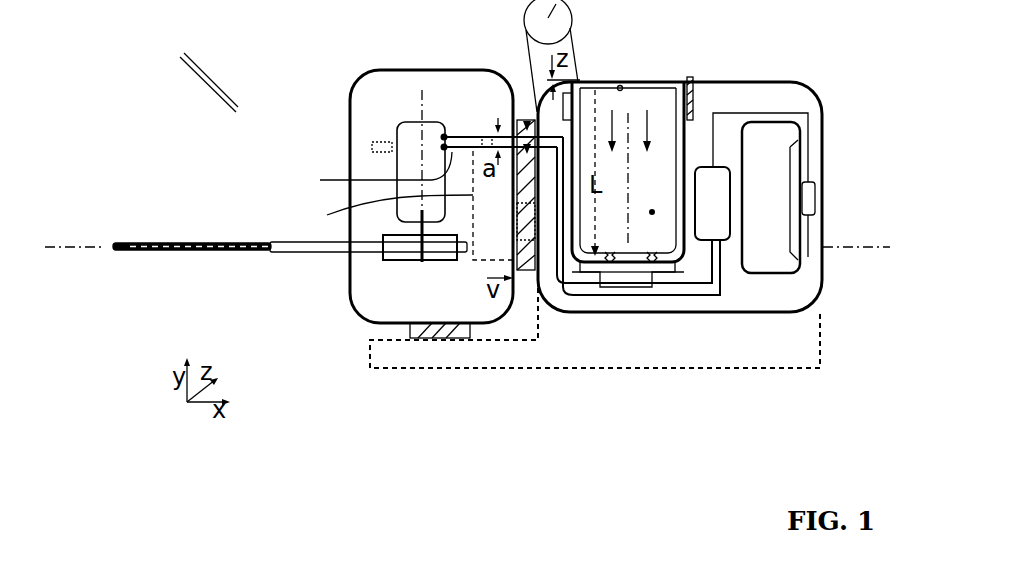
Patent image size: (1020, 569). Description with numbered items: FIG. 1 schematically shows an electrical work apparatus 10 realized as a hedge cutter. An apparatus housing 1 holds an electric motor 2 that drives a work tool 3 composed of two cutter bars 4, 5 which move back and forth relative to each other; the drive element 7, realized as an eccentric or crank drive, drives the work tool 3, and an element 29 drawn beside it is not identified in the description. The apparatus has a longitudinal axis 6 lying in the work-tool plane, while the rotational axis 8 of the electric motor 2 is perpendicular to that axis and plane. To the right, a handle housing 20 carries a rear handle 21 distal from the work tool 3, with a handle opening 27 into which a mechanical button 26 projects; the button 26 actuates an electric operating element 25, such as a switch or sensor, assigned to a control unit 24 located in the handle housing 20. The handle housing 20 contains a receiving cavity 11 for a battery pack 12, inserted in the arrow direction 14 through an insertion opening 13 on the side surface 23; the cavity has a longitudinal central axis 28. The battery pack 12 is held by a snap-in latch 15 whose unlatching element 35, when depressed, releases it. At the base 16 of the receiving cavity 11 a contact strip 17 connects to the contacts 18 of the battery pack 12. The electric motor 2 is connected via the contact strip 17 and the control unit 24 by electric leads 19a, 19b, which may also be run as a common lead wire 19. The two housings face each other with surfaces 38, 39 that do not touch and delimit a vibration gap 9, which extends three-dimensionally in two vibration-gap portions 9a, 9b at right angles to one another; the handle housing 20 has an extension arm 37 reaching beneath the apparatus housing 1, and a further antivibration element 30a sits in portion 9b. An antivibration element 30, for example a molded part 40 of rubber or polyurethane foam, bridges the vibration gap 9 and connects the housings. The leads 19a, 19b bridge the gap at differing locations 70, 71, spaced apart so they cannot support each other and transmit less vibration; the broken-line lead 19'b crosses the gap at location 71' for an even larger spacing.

The apparatus housing 1 is at (360, 97).
The electric motor 2 is at (407, 130).
The work tool 3 is at (150, 258).
The cutter bar 4 is at (243, 252).
The cutter bar 5 is at (200, 250).
The longitudinal axis 6 is at (92, 249).
The drive element 7 is at (428, 262).
The rotational axis 8 is at (418, 98).
The vibration gap 9 is at (508, 222).
The vibration-gap portion 9a is at (528, 102).
The vibration-gap portion 9b is at (390, 332).
The electrical work apparatus 10 is at (282, 139).
The receiving cavity 11 is at (682, 170).
The battery pack 12 is at (705, 245).
The insertion opening 13 is at (620, 85).
The arrow direction 14 is at (648, 118).
The snap-in latch 15 is at (580, 88).
The base 16 is at (625, 275).
The contact strip 17 is at (637, 274).
The contacts 18 is at (607, 262).
The common lead wire 19 is at (494, 85).
The electric lead 19a is at (450, 131).
The electric lead 19b is at (364, 174).
The lead 19'b is at (372, 211).
The handle housing 20 is at (815, 298).
The rear handle 21 is at (815, 127).
The side surface 23 is at (765, 76).
The control unit 24 is at (732, 236).
The electric operating element 25 is at (812, 198).
The mechanical button 26 is at (793, 170).
The handle opening 27 is at (772, 137).
The longitudinal central axis 28 is at (654, 216).
The coupling 29 is at (372, 262).
The antivibration element 30 is at (525, 272).
The further antivibration element 30a is at (437, 328).
The unlatching element 35 is at (695, 106).
The extension arm 37 is at (398, 352).
The surface 38 is at (533, 115).
The surface 39 is at (525, 110).
The molded part 40 is at (558, 278).
The location 70 is at (522, 117).
The location 71 is at (493, 203).
The location 71' is at (504, 230).